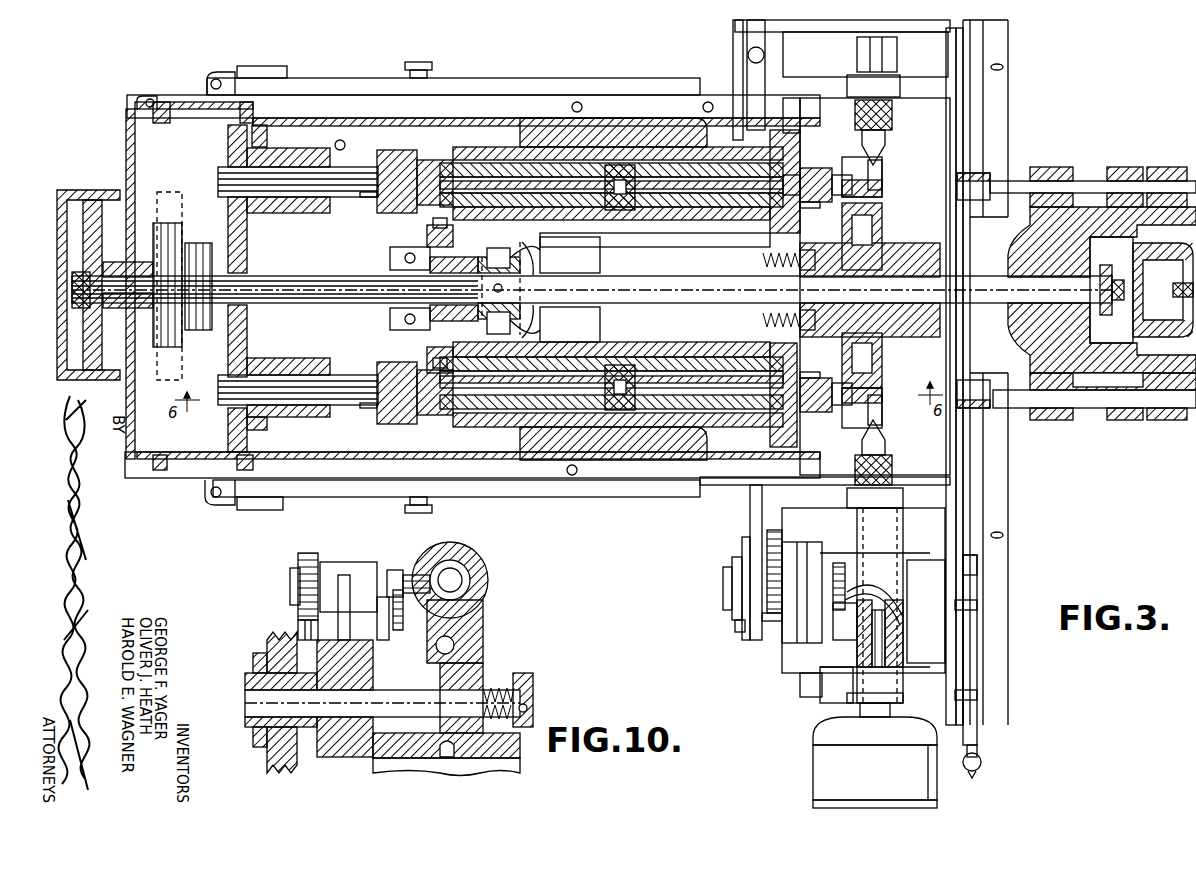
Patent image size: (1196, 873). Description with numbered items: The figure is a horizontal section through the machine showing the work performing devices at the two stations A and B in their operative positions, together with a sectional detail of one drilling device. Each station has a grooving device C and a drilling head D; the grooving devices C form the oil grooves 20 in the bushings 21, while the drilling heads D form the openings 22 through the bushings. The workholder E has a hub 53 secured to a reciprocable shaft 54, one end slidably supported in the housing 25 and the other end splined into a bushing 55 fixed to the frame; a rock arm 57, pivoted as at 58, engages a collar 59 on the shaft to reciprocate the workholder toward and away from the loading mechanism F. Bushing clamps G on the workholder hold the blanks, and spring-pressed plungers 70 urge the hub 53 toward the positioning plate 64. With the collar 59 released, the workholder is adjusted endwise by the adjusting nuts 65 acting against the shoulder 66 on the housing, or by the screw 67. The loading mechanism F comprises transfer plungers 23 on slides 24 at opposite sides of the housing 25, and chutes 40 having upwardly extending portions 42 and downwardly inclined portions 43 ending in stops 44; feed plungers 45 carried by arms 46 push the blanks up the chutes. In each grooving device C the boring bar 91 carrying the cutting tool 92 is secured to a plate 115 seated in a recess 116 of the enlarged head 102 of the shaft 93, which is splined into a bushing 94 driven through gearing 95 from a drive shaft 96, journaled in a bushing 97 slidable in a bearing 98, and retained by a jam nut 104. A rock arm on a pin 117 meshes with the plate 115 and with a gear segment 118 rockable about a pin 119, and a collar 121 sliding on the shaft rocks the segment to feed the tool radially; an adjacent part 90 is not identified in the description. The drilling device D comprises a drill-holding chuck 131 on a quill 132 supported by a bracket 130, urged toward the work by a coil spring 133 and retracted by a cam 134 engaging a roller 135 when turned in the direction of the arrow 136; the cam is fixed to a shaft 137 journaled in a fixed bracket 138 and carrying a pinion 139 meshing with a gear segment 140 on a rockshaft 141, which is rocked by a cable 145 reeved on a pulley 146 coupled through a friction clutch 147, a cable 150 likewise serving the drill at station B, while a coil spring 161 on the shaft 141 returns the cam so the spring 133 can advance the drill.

In FIG. 3, the pin 117 is at (620, 178).
In FIG. 3, the cable 150 is at (750, 38).
In FIG. 3, the enlarged head 102 is at (790, 133).
In FIG. 3, the spindle coupling 90 is at (830, 172).
In FIG. 3, the oil grooves 20 is at (842, 162).
In FIG. 3, the bushing clamps G is at (855, 155).
In FIG. 3, the openings 22 is at (882, 155).
In FIG. 3, the work performing station B is at (898, 170).
In FIG. 3, the cutting tool 92 is at (842, 195).
In FIG. 3, the bushings 21 is at (882, 180).
In FIG. 3, the spring-pressed plungers 70 is at (808, 252).
In FIG. 3, the workholder E is at (882, 236).
In FIG. 3, the hub 53 is at (920, 250).
In FIG. 3, the gearing 95 is at (226, 222).
In FIG. 3, the bushing 94 is at (305, 200).
In FIG. 3, the shaft 93 is at (365, 185).
In FIG. 3, the gear segment 118 is at (415, 168).
In FIG. 3, the pin 119 is at (368, 197).
In FIG. 3, the jam nut 104 is at (432, 222).
In FIG. 3, the collar 121 is at (426, 236).
In FIG. 3, the rock arm 57 is at (532, 262).
In FIG. 3, the collar 59 is at (505, 277).
In FIG. 3, the grooving device C is at (623, 272).
In FIG. 3, the reciprocable shaft 54 is at (655, 275).
In FIG. 3, the bearing 98 is at (678, 235).
In FIG. 3, the bushing 97 is at (730, 210).
In FIG. 3, the plate 115 is at (772, 215).
In FIG. 3, the pivot 58 is at (542, 320).
In FIG. 3, the recess 116 is at (790, 345).
In FIG. 3, the positioning plate 64 is at (815, 328).
In FIG. 3, the work performing station A is at (883, 400).
In FIG. 3, the boring bar 91 is at (838, 412).
In FIG. 3, the drill-holding chuck 131 is at (890, 465).
In FIG. 3, the cable 145 is at (749, 510).
In FIG. 10, the cable 145 is at (268, 635).
In FIG. 3, the drive shaft 96 is at (238, 295).
In FIG. 3, the splined bushing 55 is at (410, 298).
In FIG. 3, the drilling head D is at (935, 55).
In FIG. 3, the chutes 40 is at (990, 100).
In FIG. 3, the inclined portions 43 is at (978, 128).
In FIG. 3, the plungers 23 is at (1020, 178).
In FIG. 3, the loading mechanism F is at (1088, 178).
In FIG. 3, the slide 24 is at (1130, 178).
In FIG. 3, the stops 44 is at (1030, 215).
In FIG. 3, the adjusting nuts 65 is at (1104, 273).
In FIG. 3, the screw 67 is at (1178, 292).
In FIG. 3, the shoulder 66 is at (1104, 312).
In FIG. 3, the housing 25 is at (1062, 340).
In FIG. 3, the upwardly extending portions 42 is at (980, 615).
In FIG. 3, the plungers 45 is at (978, 740).
In FIG. 3, the arms 46 is at (980, 766).
In FIG. 3, the quill 132 is at (870, 600).
In FIG. 10, the quill 132 is at (462, 575).
In FIG. 3, the gear segment 140 is at (745, 545).
In FIG. 10, the gear segment 140 is at (312, 625).
In FIG. 3, the pinion 139 is at (766, 578).
In FIG. 10, the pinion 139 is at (305, 573).
In FIG. 3, the cam 134 is at (832, 580).
In FIG. 10, the cam 134 is at (385, 640).
In FIG. 3, the rockshaft 141 is at (725, 590).
In FIG. 10, the rockshaft 141 is at (258, 705).
In FIG. 3, the pulley 146 is at (745, 595).
In FIG. 10, the pulley 146 is at (272, 757).
In FIG. 3, the shaft 137 is at (762, 608).
In FIG. 10, the shaft 137 is at (295, 593).
In FIG. 3, the fixed bracket 138 is at (795, 620).
In FIG. 10, the fixed bracket 138 is at (380, 550).
In FIG. 3, the roller 135 is at (840, 633).
In FIG. 10, the roller 135 is at (398, 570).
In FIG. 3, the brackets 130 is at (780, 665).
In FIG. 10, the brackets 130 is at (470, 665).
In FIG. 10, the friction clutch 147 is at (262, 663).
In FIG. 10, the arrow 136 is at (398, 610).
In FIG. 10, the coil spring 133 is at (440, 655).
In FIG. 10, the coil spring 161 is at (497, 683).